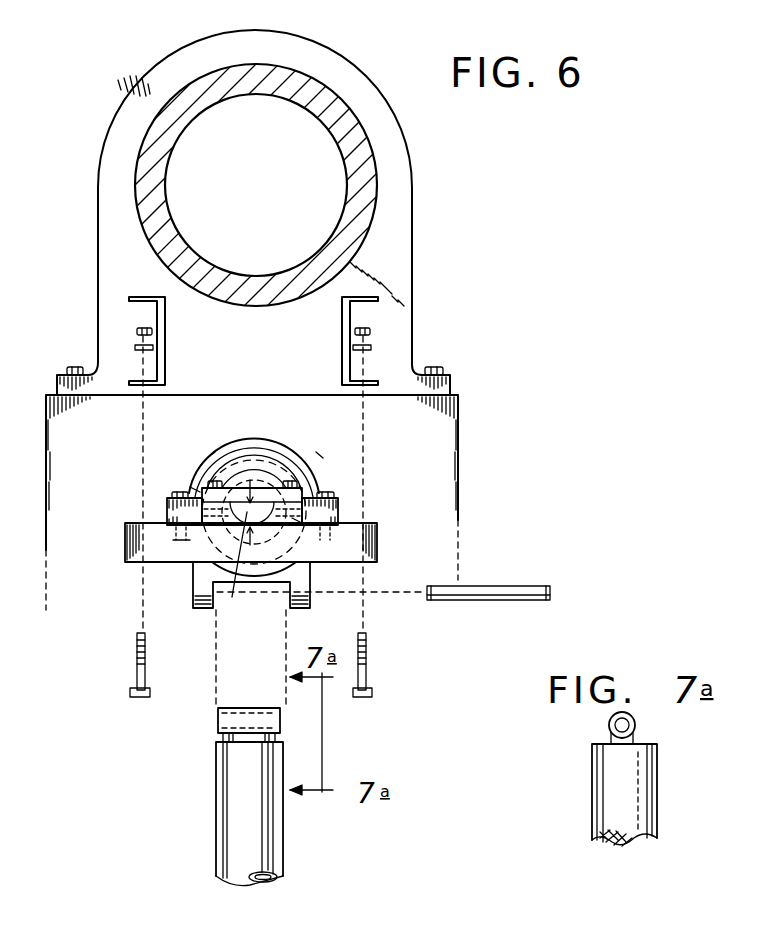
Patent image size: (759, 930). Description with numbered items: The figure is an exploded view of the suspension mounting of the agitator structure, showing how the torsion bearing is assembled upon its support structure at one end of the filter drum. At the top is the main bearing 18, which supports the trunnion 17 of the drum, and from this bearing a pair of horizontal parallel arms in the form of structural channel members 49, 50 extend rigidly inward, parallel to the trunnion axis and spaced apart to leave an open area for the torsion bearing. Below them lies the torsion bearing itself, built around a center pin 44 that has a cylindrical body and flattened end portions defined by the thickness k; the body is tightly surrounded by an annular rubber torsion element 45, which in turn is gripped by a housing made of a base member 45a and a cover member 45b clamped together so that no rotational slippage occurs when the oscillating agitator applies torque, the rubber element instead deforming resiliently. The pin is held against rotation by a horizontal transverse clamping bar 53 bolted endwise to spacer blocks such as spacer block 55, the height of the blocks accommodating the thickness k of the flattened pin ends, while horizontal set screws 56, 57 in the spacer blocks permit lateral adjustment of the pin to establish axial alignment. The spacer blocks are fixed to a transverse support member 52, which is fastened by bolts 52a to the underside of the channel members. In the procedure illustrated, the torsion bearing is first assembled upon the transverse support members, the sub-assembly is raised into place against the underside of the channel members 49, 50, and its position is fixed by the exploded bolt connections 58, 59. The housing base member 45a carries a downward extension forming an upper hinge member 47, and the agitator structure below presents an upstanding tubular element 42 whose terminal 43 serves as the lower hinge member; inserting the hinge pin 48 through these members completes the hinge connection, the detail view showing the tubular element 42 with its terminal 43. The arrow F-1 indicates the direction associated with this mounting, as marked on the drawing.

In FIG. 6, the trunnion 17 is at (365, 178).
In FIG. 6, the main bearing 18 is at (405, 222).
In FIG. 6, the channel member 49 is at (165, 331).
In FIG. 6, the channel member 50 is at (342, 330).
In FIG. 6, the bolts 52a is at (372, 333).
In FIG. 6, the torsion element 45 is at (238, 467).
In FIG. 6, the base member 45a is at (190, 543).
In FIG. 6, the cover member 45b is at (200, 468).
In FIG. 6, the clamping bar 53 is at (263, 487).
In FIG. 6, the set screw 56 is at (192, 488).
In FIG. 6, the center pin 44 is at (310, 481).
In FIG. 6, the force direction F-1 is at (313, 458).
In FIG. 6, the spacer block 55 is at (207, 511).
In FIG. 6, the set screw 57 is at (292, 518).
In FIG. 6, the transverse support member 52 is at (378, 547).
In FIG. 6, the thickness k is at (235, 567).
In FIG. 6, the upper hinge member 47 is at (310, 580).
In FIG. 6, the hinge pin 48 is at (483, 588).
In FIG. 6, the bolt connection 58 is at (138, 660).
In FIG. 6, the bolt connection 59 is at (367, 653).
In FIG. 6, the terminal 43 is at (250, 716).
In FIG. 7a, the terminal 43 is at (610, 728).
In FIG. 6, the upstanding tubular element 42 is at (270, 805).
In FIG. 7a, the upstanding tubular element 42 is at (612, 788).